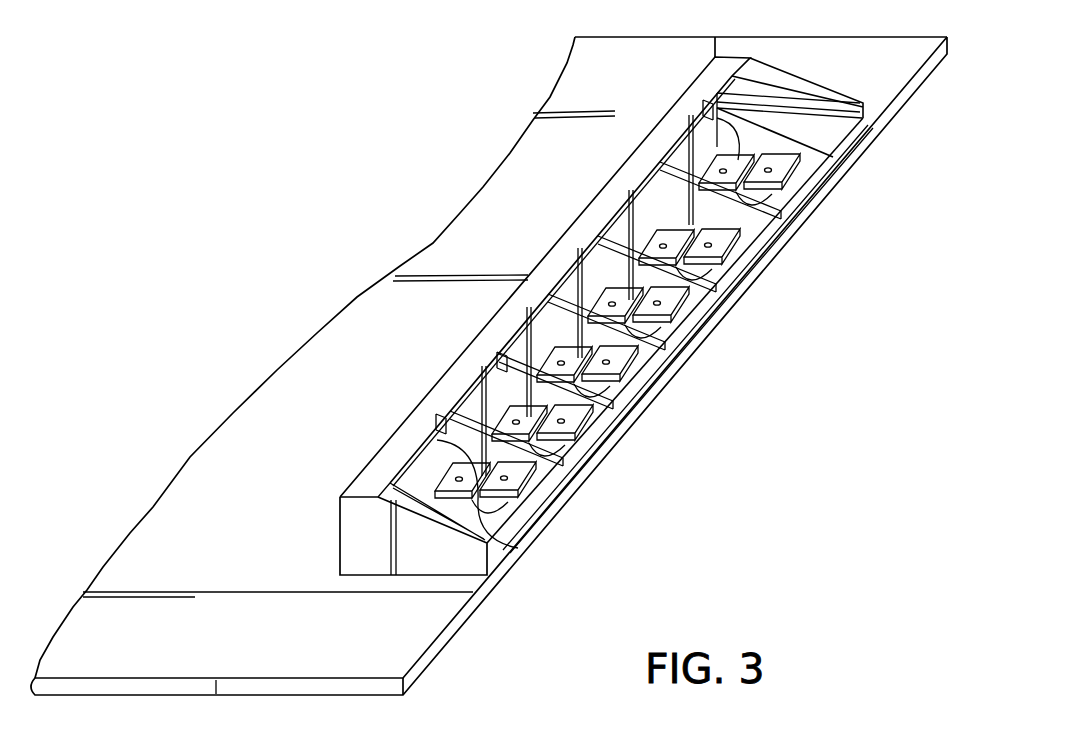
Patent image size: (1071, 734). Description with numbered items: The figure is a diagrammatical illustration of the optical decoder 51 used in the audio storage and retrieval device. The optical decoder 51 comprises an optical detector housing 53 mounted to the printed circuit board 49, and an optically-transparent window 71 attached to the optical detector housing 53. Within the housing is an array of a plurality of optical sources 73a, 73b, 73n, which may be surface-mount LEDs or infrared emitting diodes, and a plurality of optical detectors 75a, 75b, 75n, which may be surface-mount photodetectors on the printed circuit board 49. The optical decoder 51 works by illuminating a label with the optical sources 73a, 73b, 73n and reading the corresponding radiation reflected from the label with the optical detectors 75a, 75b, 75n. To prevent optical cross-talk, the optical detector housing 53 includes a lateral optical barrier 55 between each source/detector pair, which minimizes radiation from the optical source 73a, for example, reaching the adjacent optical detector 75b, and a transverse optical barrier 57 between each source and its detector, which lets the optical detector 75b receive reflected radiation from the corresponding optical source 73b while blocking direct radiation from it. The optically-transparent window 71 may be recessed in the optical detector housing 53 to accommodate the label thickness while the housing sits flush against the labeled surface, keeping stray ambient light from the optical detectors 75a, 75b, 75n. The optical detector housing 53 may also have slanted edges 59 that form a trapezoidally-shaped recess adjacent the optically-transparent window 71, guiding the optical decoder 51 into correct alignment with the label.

The printed circuit board 49 is at (424, 650).
The optical decoder 51 is at (718, 37).
The optical detector housing 53 is at (347, 489).
The lateral optical barrier 55 is at (612, 213).
The transverse optical barrier 57 is at (835, 142).
The slanted edges 59 is at (787, 90).
The optically-transparent window 71 is at (800, 212).
The optical source 73a is at (537, 511).
The optical source 73b is at (588, 427).
The optical source 73n is at (805, 172).
The optical detector 75a is at (430, 423).
The optical detector 75b is at (510, 360).
The optical detector 75n is at (707, 107).